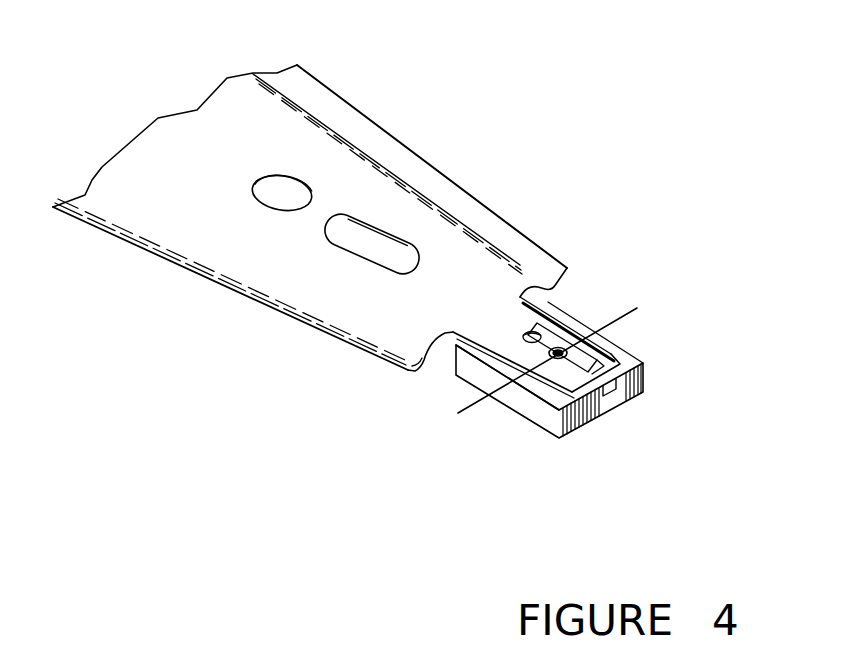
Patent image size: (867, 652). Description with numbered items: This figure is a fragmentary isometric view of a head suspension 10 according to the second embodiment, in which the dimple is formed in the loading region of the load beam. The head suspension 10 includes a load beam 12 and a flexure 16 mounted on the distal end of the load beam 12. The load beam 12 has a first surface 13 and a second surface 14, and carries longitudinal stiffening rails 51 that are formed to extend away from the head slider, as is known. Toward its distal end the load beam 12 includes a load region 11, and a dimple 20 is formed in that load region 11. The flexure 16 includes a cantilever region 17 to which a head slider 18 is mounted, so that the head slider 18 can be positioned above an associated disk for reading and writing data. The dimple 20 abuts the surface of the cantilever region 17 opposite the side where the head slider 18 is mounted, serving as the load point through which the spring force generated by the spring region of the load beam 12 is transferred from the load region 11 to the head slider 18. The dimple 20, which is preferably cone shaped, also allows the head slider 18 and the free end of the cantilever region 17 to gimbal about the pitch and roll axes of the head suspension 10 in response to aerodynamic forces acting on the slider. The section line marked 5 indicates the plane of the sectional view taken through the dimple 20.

The head suspension 10 is at (465, 161).
The load beam 12 is at (172, 215).
The stiffening rails 51 is at (480, 220).
The first surface 13 is at (523, 280).
The second surface 14 is at (430, 362).
The flexure 16 is at (565, 318).
The load region 11 is at (530, 350).
The dimple 20 is at (558, 360).
The section line 5- 5 is at (637, 308).
The head slider 18 is at (638, 386).
The cantilever region 17 is at (590, 383).